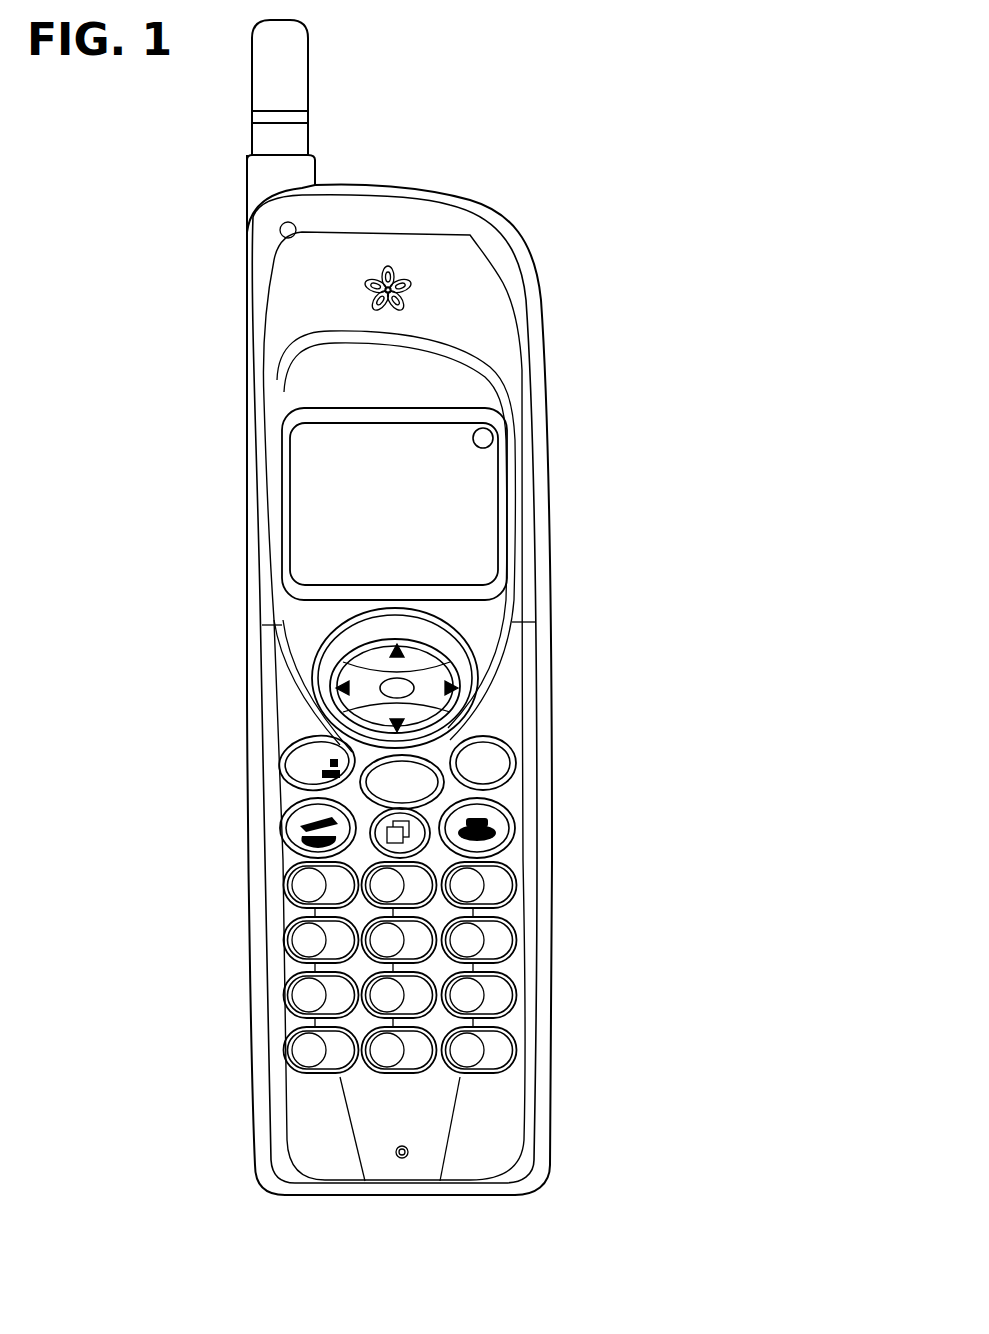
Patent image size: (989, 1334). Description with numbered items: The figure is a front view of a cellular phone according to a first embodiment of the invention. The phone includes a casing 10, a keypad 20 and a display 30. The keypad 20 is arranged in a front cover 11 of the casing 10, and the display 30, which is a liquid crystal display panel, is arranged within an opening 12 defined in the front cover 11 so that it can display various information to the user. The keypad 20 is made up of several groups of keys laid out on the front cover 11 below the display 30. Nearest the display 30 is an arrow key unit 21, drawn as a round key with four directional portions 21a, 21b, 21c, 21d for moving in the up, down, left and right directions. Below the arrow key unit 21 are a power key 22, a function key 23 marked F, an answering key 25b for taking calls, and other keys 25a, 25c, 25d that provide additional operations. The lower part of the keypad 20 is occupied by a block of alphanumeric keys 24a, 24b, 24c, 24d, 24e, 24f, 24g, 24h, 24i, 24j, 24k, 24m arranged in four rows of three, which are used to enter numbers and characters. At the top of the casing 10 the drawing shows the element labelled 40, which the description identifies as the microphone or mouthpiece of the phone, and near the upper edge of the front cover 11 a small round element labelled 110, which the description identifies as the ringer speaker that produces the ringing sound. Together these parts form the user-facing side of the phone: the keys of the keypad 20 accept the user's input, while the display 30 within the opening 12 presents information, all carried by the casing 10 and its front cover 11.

The casing 10 is at (482, 205).
The front cover 11 is at (543, 370).
The opening 12 is at (490, 446).
The keypad 20 is at (563, 857).
The arrow key unit 21 is at (455, 645).
The arrow key unit 21a is at (347, 634).
The arrow key unit 21b is at (353, 723).
The arrow key unit 21c is at (340, 673).
The arrow key unit 21d is at (470, 690).
The power key 22 is at (500, 827).
The function key (F) 23 is at (368, 790).
The alphanumeric key 24a is at (290, 885).
The alphanumeric key 24b is at (362, 897).
The alphanumeric key 24c is at (498, 887).
The alphanumeric key 24d is at (290, 941).
The alphanumeric key 24e is at (362, 950).
The alphanumeric key 24f is at (498, 940).
The alphanumeric key 24g is at (290, 996).
The alphanumeric key 24h is at (362, 1005).
The alphanumeric key 24i is at (498, 995).
The alphanumeric key 24j is at (290, 1056).
The alphanumeric key 24k is at (364, 1070).
The alphanumeric key 24m is at (498, 1050).
The other key 25a is at (290, 757).
The answering key 25b is at (290, 829).
The other key 25c is at (500, 752).
The other key 25d is at (440, 798).
The display 30 is at (458, 513).
The microphone (mouthpiece) 40 is at (308, 62).
The ringer speaker 110 is at (280, 230).